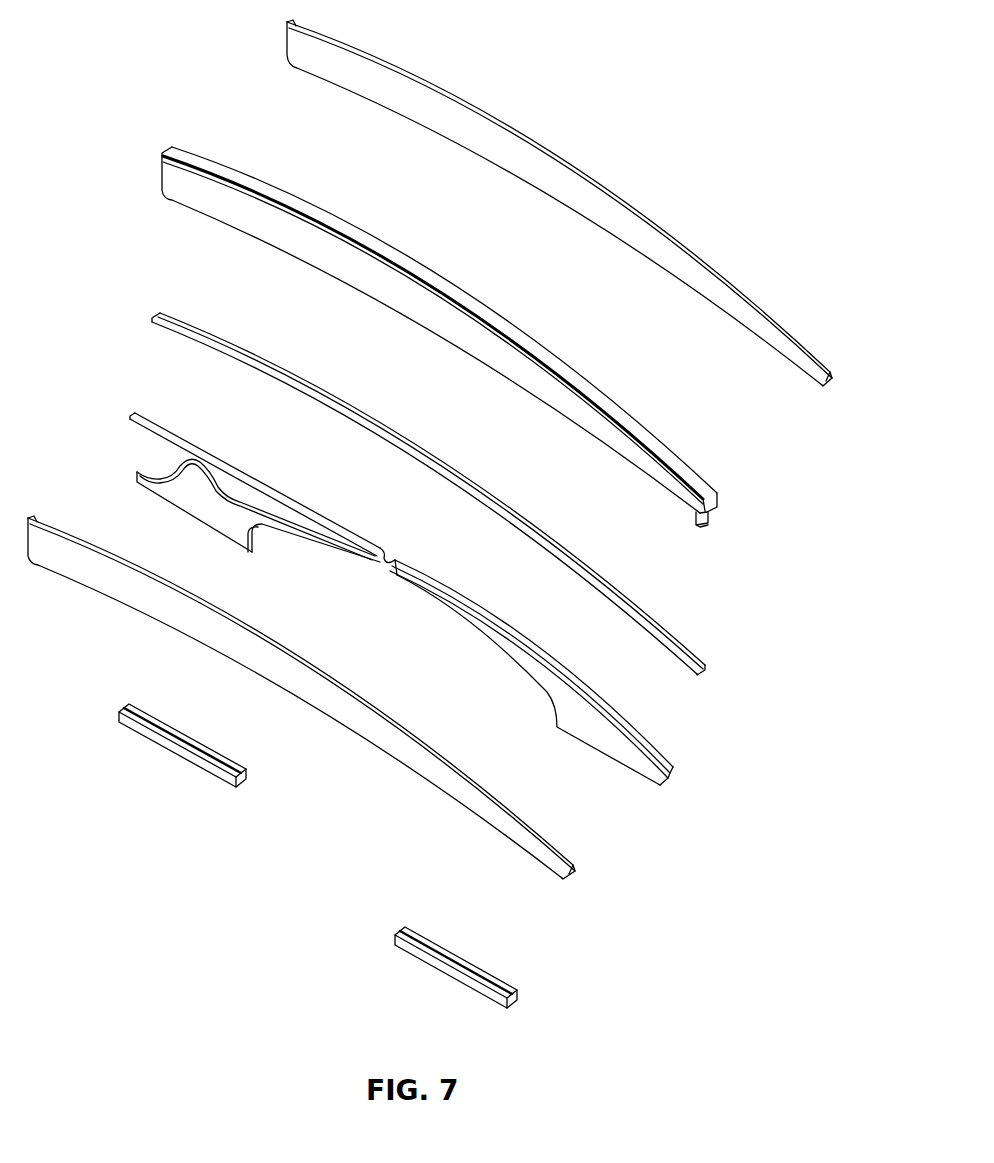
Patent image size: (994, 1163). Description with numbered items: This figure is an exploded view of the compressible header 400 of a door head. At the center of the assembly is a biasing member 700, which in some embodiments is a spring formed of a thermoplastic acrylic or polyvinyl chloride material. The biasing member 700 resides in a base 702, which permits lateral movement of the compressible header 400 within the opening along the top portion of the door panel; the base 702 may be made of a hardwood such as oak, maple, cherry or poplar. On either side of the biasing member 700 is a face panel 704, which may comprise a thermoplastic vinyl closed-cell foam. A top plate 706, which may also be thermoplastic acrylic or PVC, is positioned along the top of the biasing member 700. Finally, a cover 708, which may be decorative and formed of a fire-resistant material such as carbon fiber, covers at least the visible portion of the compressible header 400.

The compressible header 400 is at (626, 74).
The biasing member 700 is at (585, 733).
The base 702 is at (173, 747).
The face panel 704 is at (465, 133).
The top plate 706 is at (670, 637).
The cover 708 is at (178, 182).